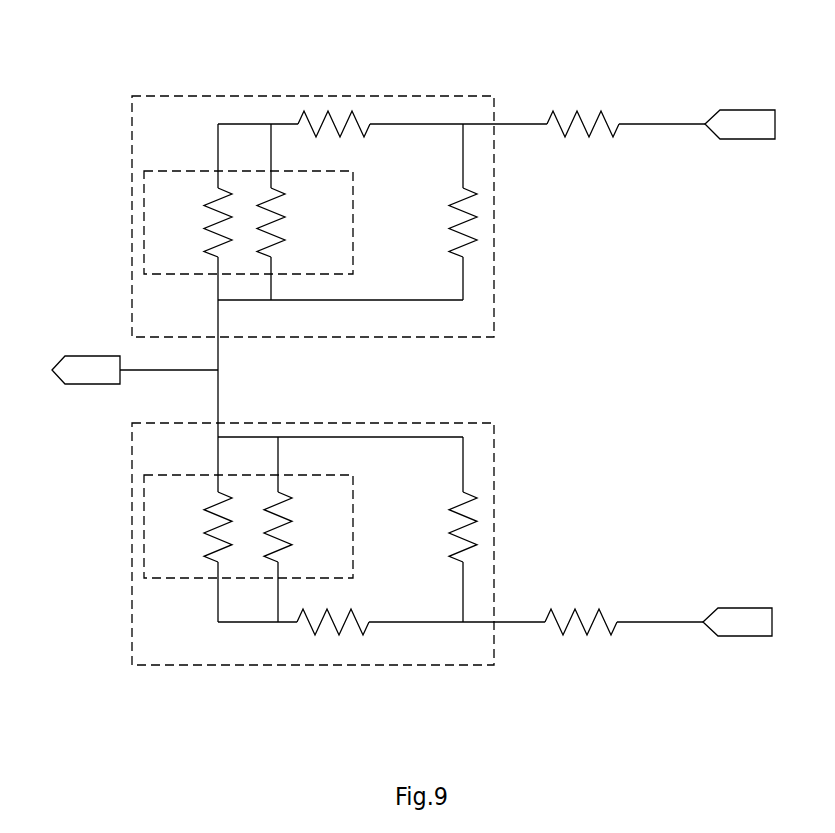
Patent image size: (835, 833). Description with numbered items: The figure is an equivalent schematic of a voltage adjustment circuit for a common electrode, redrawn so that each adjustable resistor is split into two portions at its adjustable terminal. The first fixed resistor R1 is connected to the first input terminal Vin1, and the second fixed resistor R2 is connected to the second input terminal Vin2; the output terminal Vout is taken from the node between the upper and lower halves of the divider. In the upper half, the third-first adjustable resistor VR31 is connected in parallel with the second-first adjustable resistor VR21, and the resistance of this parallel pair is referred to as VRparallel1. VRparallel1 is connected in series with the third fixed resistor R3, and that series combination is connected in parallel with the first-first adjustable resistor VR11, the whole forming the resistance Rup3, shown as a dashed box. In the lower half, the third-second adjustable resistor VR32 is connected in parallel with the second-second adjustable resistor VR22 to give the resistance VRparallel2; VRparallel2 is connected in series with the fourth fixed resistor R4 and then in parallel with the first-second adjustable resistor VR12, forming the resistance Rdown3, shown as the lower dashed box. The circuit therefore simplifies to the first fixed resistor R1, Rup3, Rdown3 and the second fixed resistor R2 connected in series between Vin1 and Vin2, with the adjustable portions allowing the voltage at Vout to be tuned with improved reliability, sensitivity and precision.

The first fixed resistor R1 is at (583, 136).
The second fixed resistor R2 is at (581, 635).
The third fixed resistor R3 is at (334, 136).
The fourth fixed resistor R4 is at (333, 635).
The first-first adjustable resistor VR11 is at (437, 222).
The second-first adjustable resistor VR21 is at (297, 222).
The third-first adjustable resistor VR31 is at (192, 222).
The first-second adjustable resistor VR12 is at (437, 527).
The second-second adjustable resistor VR22 is at (305, 527).
The third-second adjustable resistor VR32 is at (192, 527).
The parallel resistance VRparallel1 is at (353, 274).
The parallel resistance VRparallel2 is at (353, 475).
The resistance Rup3 is at (132, 96).
The resistance Rdown3 is at (132, 665).
The first input terminal Vin1 is at (760, 125).
The second input terminal Vin2 is at (758, 622).
The output terminal Vout is at (86, 356).